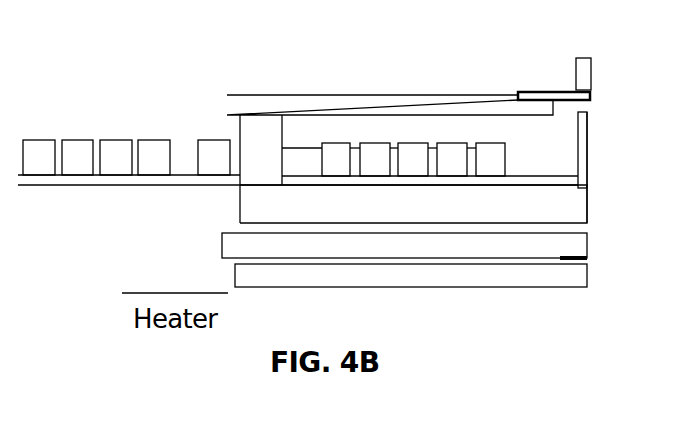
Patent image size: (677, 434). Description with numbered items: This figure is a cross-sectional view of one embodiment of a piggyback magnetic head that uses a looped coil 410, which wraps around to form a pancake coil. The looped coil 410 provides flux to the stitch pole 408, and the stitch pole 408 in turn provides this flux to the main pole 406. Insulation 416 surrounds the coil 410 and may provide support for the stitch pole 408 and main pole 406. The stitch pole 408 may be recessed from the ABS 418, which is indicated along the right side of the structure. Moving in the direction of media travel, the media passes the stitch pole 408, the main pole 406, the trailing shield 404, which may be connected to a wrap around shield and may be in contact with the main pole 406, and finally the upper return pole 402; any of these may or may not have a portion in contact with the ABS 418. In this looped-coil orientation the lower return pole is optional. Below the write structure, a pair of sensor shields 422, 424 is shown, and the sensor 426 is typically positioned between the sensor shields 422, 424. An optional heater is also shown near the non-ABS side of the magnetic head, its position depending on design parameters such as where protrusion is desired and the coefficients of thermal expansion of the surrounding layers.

The upper return pole 402 is at (591, 72).
The trailing shield 404 is at (590, 157).
The main pole 406 is at (557, 92).
The stitch pole 408 is at (417, 95).
The looped coil 410 is at (487, 142).
The insulation 416 is at (465, 215).
The ABS 418 is at (594, 204).
The sensor shield 422 is at (222, 247).
The sensor shield 424 is at (235, 267).
The sensor 426 is at (582, 256).